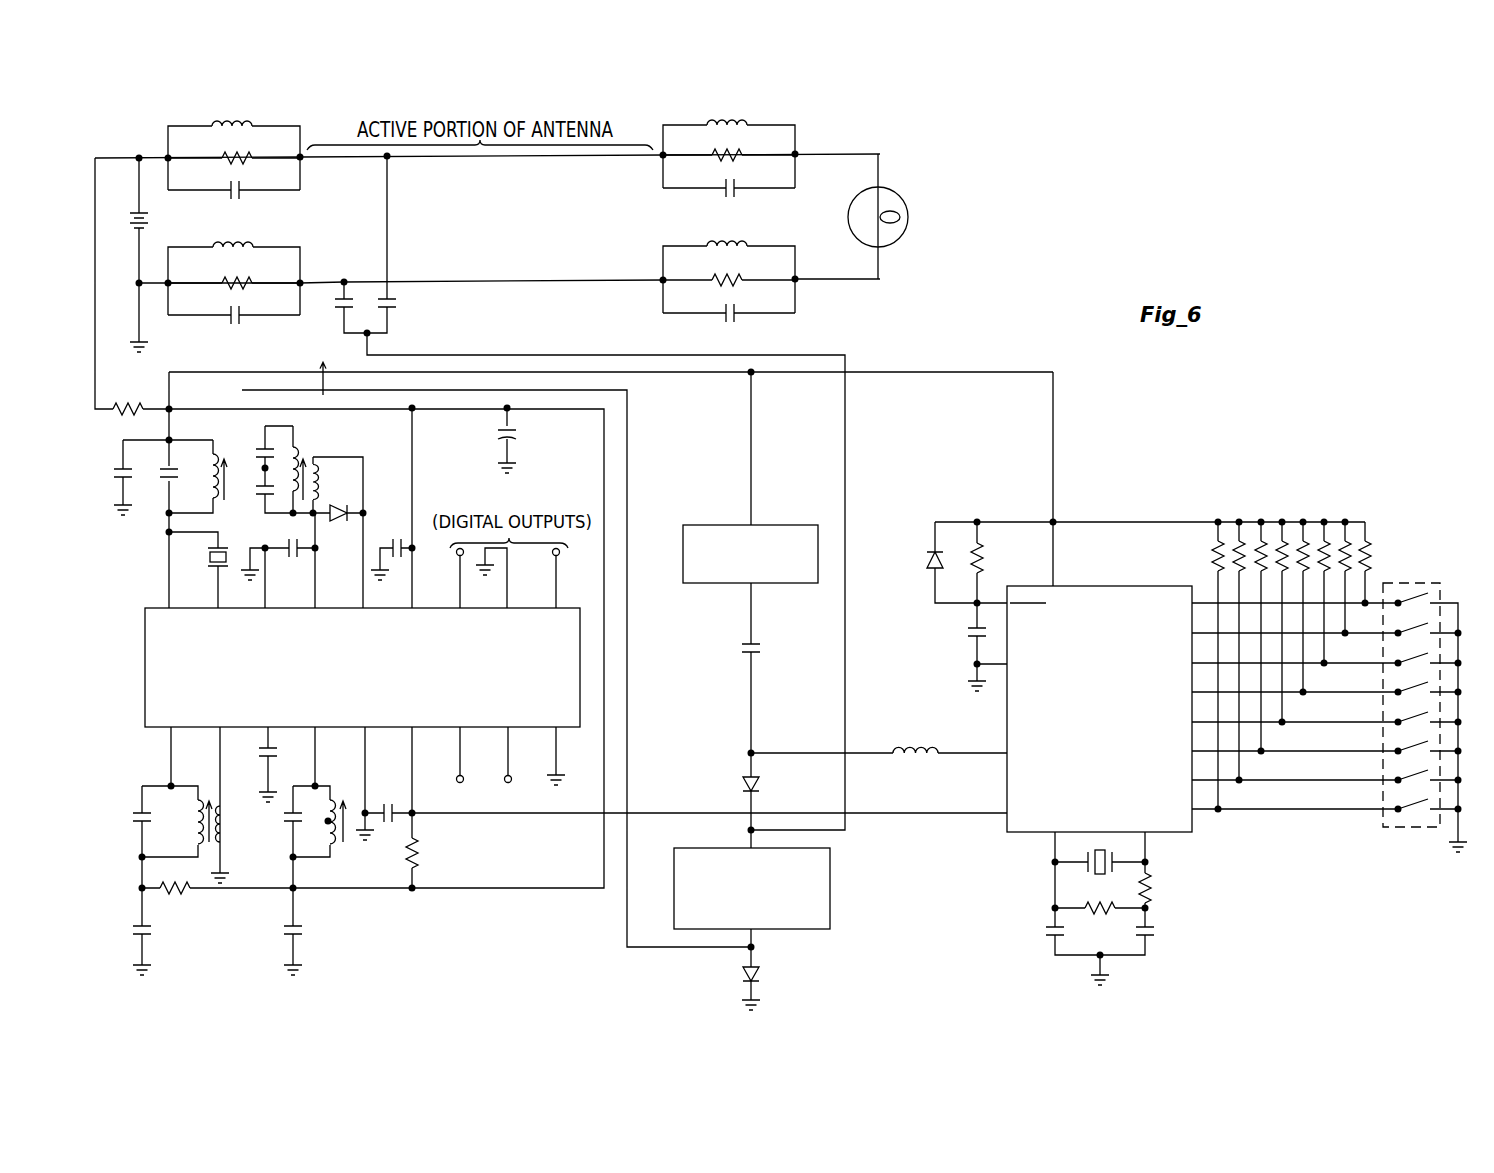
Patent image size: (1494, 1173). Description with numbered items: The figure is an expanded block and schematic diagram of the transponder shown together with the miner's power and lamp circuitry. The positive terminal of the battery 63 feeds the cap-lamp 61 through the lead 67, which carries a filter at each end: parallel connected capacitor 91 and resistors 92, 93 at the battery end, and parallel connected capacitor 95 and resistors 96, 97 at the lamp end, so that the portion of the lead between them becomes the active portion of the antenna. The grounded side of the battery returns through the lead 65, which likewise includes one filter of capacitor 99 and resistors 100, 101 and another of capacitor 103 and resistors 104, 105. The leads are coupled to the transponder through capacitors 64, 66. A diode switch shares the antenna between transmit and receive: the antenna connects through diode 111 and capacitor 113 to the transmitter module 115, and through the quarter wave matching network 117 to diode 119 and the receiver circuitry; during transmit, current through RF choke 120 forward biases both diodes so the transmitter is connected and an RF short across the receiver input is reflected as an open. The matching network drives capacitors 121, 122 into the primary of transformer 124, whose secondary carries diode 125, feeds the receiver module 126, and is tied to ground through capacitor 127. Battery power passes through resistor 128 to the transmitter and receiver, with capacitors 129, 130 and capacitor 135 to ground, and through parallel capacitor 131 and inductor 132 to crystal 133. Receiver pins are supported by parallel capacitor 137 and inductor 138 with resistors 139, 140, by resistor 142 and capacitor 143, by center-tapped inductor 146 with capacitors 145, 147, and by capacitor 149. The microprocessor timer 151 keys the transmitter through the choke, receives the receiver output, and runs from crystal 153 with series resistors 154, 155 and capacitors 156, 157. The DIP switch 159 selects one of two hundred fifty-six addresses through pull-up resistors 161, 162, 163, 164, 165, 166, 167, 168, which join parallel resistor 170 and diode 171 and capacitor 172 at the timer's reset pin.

The cap-lamp 61 is at (858, 192).
The battery 63 is at (134, 228).
The capacitor 64 is at (332, 317).
The lead 65 is at (500, 280).
The capacitor 66 is at (396, 302).
The lead 67 is at (480, 158).
The capacitor 91 is at (243, 186).
The resistor 92 is at (252, 124).
The resistor 93 is at (251, 157).
The capacitor 95 is at (724, 188).
The resistor 96 is at (757, 118).
The resistor 97 is at (740, 152).
The capacitor 99 is at (233, 319).
The resistor 100 is at (250, 255).
The resistor 101 is at (249, 286).
The capacitor 103 is at (738, 318).
The resistor 104 is at (746, 245).
The resistor 105 is at (738, 279).
The diode 111 is at (744, 783).
The capacitor 113 is at (746, 658).
The transmitter module 115 is at (726, 585).
The quarter wave matching network 117 is at (830, 905).
The diode 119 is at (744, 976).
The RF choke 120 is at (920, 722).
The capacitor 121 is at (257, 436).
The capacitor 122 is at (262, 518).
The transformer 124 is at (308, 458).
The diode 125 is at (338, 536).
The receiver module 126 is at (145, 663).
The capacitor 127 is at (285, 556).
The resistor 128 is at (128, 403).
The capacitor 129 is at (404, 529).
The capacitor 130 is at (499, 432).
The capacitor 131 is at (171, 466).
The inductor 132 is at (218, 497).
The crystal 133 is at (216, 559).
The capacitor 135 is at (118, 480).
The capacitor 137 is at (136, 809).
The inductor 138 is at (194, 818).
The resistor 139 is at (177, 888).
The resistor 140 is at (148, 943).
The resistor 142 is at (409, 855).
The capacitor 143 is at (394, 804).
The capacitor 145 is at (287, 825).
The inductor 146 is at (344, 844).
The capacitor 147 is at (303, 943).
The capacitor 149 is at (263, 756).
The microprocessor timer 151 is at (1007, 778).
The crystal 153 is at (1102, 873).
The resistor 154 is at (1110, 912).
The resistor 155 is at (1150, 881).
The capacitor 156 is at (1047, 935).
The capacitor 157 is at (1150, 933).
The DIP switch 159 is at (1417, 583).
The resistor 161 is at (1372, 556).
The resistor 162 is at (1350, 531).
The resistor 163 is at (1326, 534).
The resistor 164 is at (1307, 536).
The resistor 165 is at (1282, 536).
The resistor 166 is at (1254, 526).
The resistor 167 is at (1236, 529).
The resistor 168 is at (1214, 556).
The resistor 170 is at (982, 550).
The diode 171 is at (927, 562).
The capacitor 172 is at (971, 632).